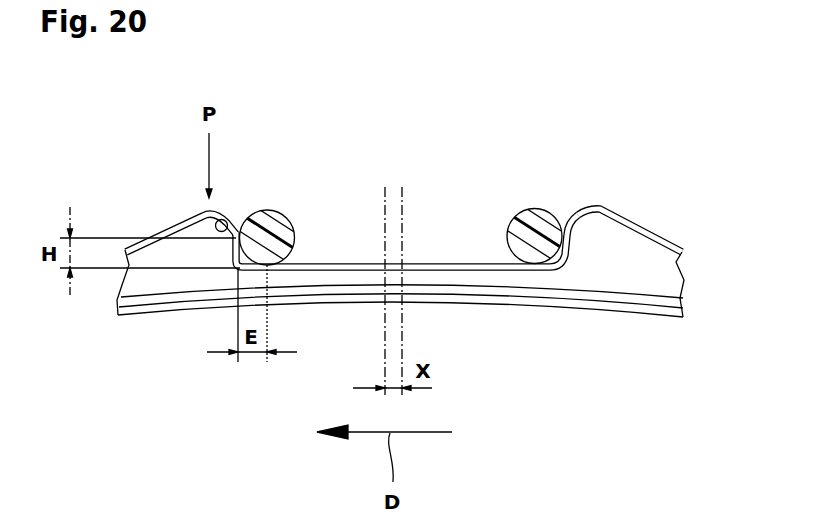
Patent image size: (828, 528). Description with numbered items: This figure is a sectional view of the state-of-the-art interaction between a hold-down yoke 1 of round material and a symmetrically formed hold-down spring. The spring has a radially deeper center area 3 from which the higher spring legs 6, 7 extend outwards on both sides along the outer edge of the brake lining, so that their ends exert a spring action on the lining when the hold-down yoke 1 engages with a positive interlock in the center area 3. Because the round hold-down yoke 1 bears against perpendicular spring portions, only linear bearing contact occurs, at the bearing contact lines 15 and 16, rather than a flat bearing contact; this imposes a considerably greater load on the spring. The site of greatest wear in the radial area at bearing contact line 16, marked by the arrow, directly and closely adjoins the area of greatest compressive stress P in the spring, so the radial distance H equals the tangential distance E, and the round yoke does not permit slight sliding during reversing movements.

The hold-down yoke 1 is at (267, 214).
The center area 3 is at (455, 263).
The spring leg 6 is at (177, 217).
The spring leg 7 is at (601, 210).
The bearing contact line 15 is at (221, 217).
The bearing contact line 16 is at (273, 271).